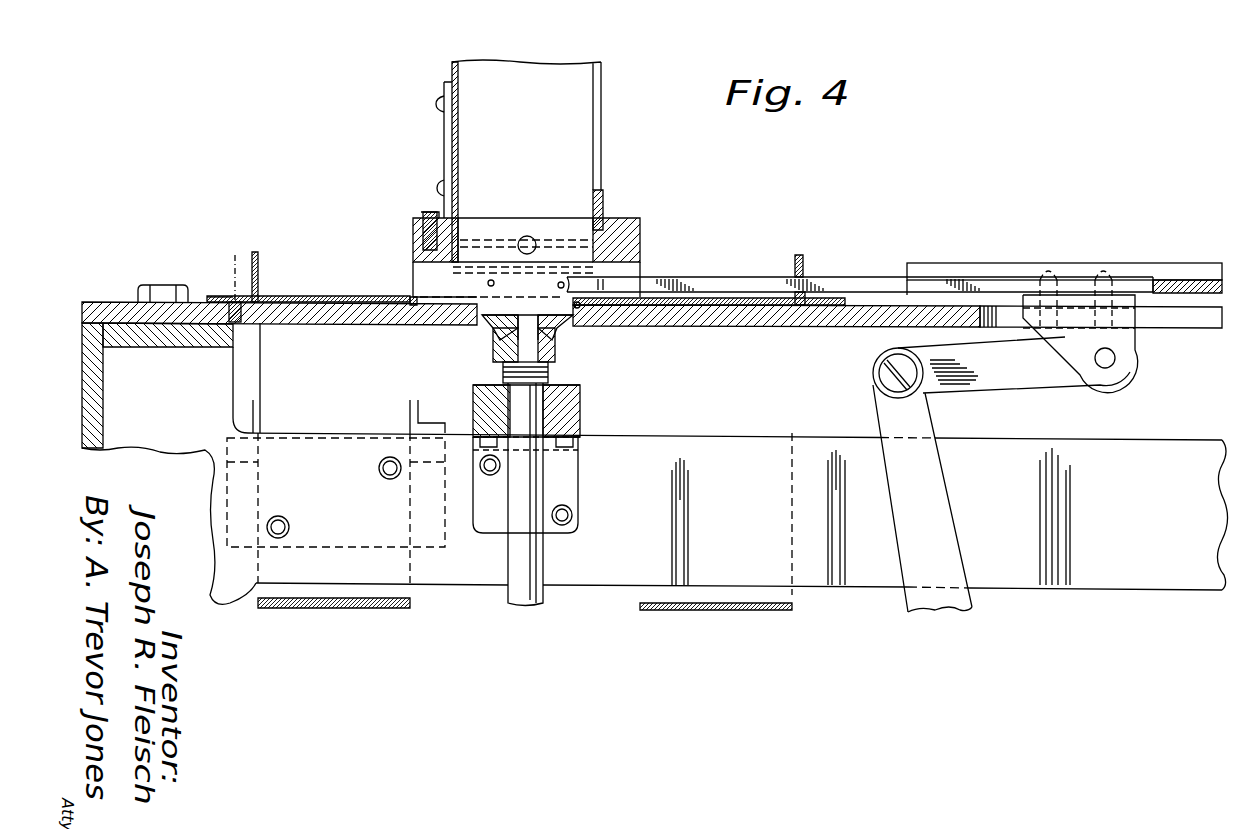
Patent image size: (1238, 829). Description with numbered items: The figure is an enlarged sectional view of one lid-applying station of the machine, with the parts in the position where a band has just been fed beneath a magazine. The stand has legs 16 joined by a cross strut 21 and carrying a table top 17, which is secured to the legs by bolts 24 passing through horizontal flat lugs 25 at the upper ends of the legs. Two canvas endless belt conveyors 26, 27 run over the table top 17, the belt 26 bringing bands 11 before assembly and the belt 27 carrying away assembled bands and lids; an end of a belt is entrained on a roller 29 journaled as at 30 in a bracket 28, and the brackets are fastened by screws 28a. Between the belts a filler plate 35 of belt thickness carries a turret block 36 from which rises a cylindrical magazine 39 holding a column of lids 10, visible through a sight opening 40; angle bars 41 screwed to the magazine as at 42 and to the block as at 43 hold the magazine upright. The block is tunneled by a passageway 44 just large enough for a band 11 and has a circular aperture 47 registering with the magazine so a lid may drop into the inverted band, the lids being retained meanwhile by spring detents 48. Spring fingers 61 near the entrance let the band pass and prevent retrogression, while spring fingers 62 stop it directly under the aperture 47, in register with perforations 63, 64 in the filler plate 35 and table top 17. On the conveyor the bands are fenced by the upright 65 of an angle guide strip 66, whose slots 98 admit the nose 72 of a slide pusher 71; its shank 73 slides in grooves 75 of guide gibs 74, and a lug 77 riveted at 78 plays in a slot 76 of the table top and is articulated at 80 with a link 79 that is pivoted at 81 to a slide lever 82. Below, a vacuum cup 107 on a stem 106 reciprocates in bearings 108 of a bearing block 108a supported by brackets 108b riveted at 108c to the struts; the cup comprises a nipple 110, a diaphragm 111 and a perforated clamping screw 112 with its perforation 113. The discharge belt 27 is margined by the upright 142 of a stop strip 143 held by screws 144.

The lid 10 is at (488, 239).
The band 11 is at (460, 277).
The legs 16 is at (135, 448).
The table top 17 is at (765, 323).
The cross strut 21 is at (748, 434).
The bolts 24 is at (165, 290).
The flat lugs 25 is at (132, 347).
The endless belt conveyor 26 is at (715, 610).
The endless belt conveyor 27 is at (292, 296).
The bracket 28 is at (240, 422).
The screws 28a is at (384, 473).
The roller 29 is at (283, 336).
The journal 30 is at (227, 440).
The filler plate 35 is at (412, 298).
The turret block 36 is at (622, 226).
The cylindrical magazine 39 is at (452, 68).
The sight openings 40 is at (600, 115).
The angle bars 41 is at (446, 150).
The screws 42 is at (438, 106).
The screws 43 is at (428, 212).
The passageway 44 is at (416, 254).
The circular aperture 47 is at (590, 232).
The spring detents 48 is at (527, 236).
The spring fingers 61 is at (558, 285).
The spring fingers 62 is at (495, 283).
The perforation 63 is at (581, 307).
The perforation 64 is at (575, 320).
The upright 65 is at (798, 255).
The angle guide strip 66 is at (822, 313).
The slide pusher 71 is at (875, 278).
The retuse nose 72 is at (605, 285).
The shank 73 is at (1145, 280).
The guide gibs 74 is at (985, 268).
The groove 75 is at (1190, 282).
The elongate slot 76 is at (1178, 326).
The lug 77 is at (1140, 340).
The rivets 78 is at (1100, 282).
The link 79 is at (1035, 388).
The articulation 80 is at (1110, 366).
The articulation 81 is at (890, 378).
The slide lever 82 is at (946, 611).
The slots 98 is at (806, 293).
The stem 106 is at (543, 553).
The vacuum cup 107 is at (474, 339).
The bearings 108 is at (575, 401).
The bearing block 108a is at (578, 419).
The brackets 108b is at (580, 468).
The rivets 108c is at (573, 515).
The nipple 110 is at (549, 373).
The diaphragm 111 is at (557, 335).
The clamping screw 112 is at (500, 346).
The perforation 113 is at (530, 318).
The upright 142 is at (237, 252).
The stop strip 143 is at (217, 296).
The screws 144 is at (252, 262).